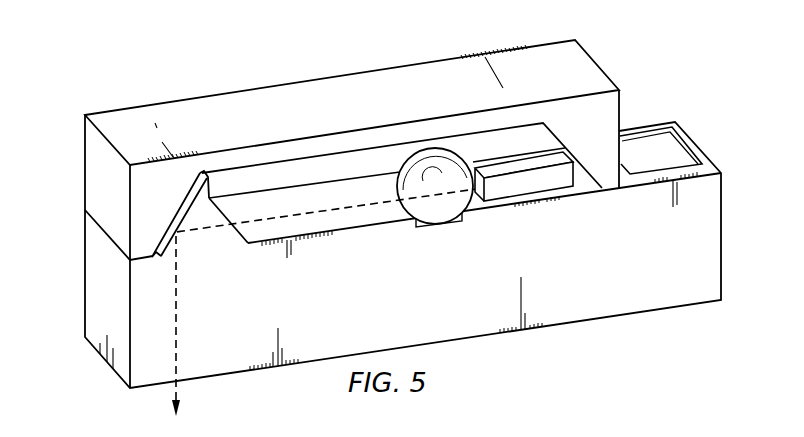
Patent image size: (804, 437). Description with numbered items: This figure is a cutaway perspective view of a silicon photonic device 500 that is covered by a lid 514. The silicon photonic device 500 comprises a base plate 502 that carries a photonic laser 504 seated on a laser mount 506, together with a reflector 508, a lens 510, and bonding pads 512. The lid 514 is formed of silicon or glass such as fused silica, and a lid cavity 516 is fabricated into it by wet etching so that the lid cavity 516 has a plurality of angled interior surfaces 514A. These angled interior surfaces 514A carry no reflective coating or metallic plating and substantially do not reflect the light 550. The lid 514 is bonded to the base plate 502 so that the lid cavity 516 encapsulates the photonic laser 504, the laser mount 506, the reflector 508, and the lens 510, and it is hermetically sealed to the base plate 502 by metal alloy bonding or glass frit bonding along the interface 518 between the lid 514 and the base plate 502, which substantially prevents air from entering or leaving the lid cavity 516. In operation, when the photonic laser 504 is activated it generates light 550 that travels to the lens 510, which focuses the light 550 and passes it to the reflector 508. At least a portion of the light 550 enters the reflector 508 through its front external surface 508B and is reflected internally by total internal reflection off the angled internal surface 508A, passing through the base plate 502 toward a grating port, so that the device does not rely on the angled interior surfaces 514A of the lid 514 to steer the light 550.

The silicon photonic device 500 is at (87, 43).
The base plate 502 is at (688, 293).
The photonic laser 504 is at (552, 177).
The laser mount 506 is at (515, 200).
The reflector 508 is at (205, 200).
The angled internal surface 508A is at (160, 242).
The front external surface 508B is at (226, 213).
The lens 510 is at (427, 153).
The bonding pads 512 is at (677, 152).
The lid 514 is at (585, 70).
The angled interior surfaces 514A is at (183, 198).
The lid cavity 516 is at (387, 164).
The interface 518 is at (107, 237).
The light 550 is at (378, 204).